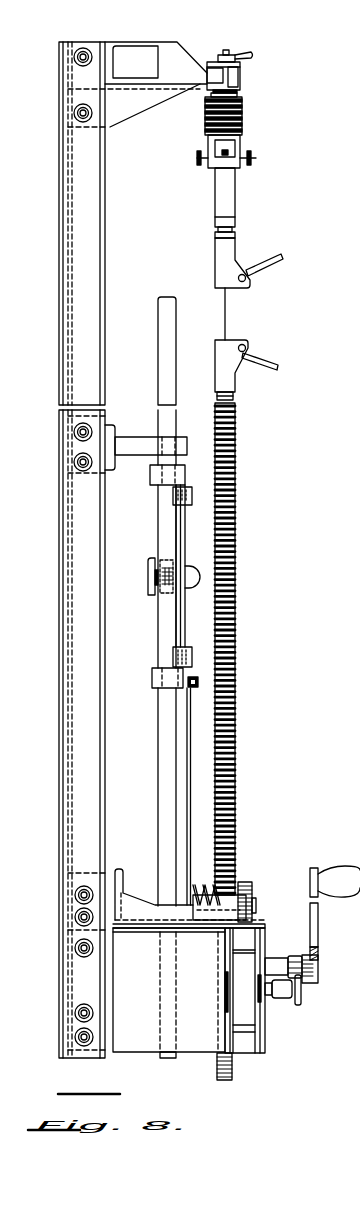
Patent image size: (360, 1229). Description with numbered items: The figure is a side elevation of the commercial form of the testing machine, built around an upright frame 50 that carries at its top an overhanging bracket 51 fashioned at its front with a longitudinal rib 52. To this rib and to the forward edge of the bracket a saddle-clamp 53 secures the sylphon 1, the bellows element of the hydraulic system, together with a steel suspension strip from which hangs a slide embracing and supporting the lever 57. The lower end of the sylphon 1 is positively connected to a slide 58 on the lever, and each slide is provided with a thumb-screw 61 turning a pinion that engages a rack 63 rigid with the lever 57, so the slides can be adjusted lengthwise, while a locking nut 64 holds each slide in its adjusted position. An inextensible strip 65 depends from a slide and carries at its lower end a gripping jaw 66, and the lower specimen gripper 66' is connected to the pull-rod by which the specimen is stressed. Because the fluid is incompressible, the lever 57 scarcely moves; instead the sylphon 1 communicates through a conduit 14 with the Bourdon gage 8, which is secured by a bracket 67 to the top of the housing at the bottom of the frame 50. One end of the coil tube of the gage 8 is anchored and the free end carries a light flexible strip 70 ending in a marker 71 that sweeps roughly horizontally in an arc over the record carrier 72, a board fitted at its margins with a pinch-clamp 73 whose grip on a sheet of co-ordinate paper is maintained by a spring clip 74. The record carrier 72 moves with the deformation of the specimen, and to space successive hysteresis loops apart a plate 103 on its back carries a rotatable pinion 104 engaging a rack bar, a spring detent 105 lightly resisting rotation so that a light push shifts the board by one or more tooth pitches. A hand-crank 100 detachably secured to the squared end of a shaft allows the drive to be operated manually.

The sylphon 1 is at (242, 110).
The Bourdon gage 8 is at (210, 888).
The conduit 14 is at (62, 330).
The upright frame 50 is at (80, 592).
The overhanging bracket 51 is at (160, 42).
The longitudinal rib 52 is at (212, 75).
The saddle-clamp 53 is at (240, 70).
The lever 57 is at (230, 145).
The slide 58 is at (133, 920).
The thumb-screw 61 is at (256, 158).
The rack 63 is at (222, 153).
The locking nut 64 is at (197, 158).
The inextensible strip 65 is at (218, 208).
The gripping jaw 66 is at (225, 289).
The lower specimen gripper 66' is at (246, 370).
The bracket 67 is at (243, 895).
The flexible strip 70 is at (191, 764).
The marker 71 is at (198, 679).
The record carrier 72 is at (182, 631).
The pinch-clamp 73 is at (190, 575).
The spring clip 74 is at (192, 496).
The hand-crank 100 is at (324, 909).
The plate 103 is at (148, 568).
The pinion 104 is at (165, 598).
The spring detent 105 is at (156, 586).